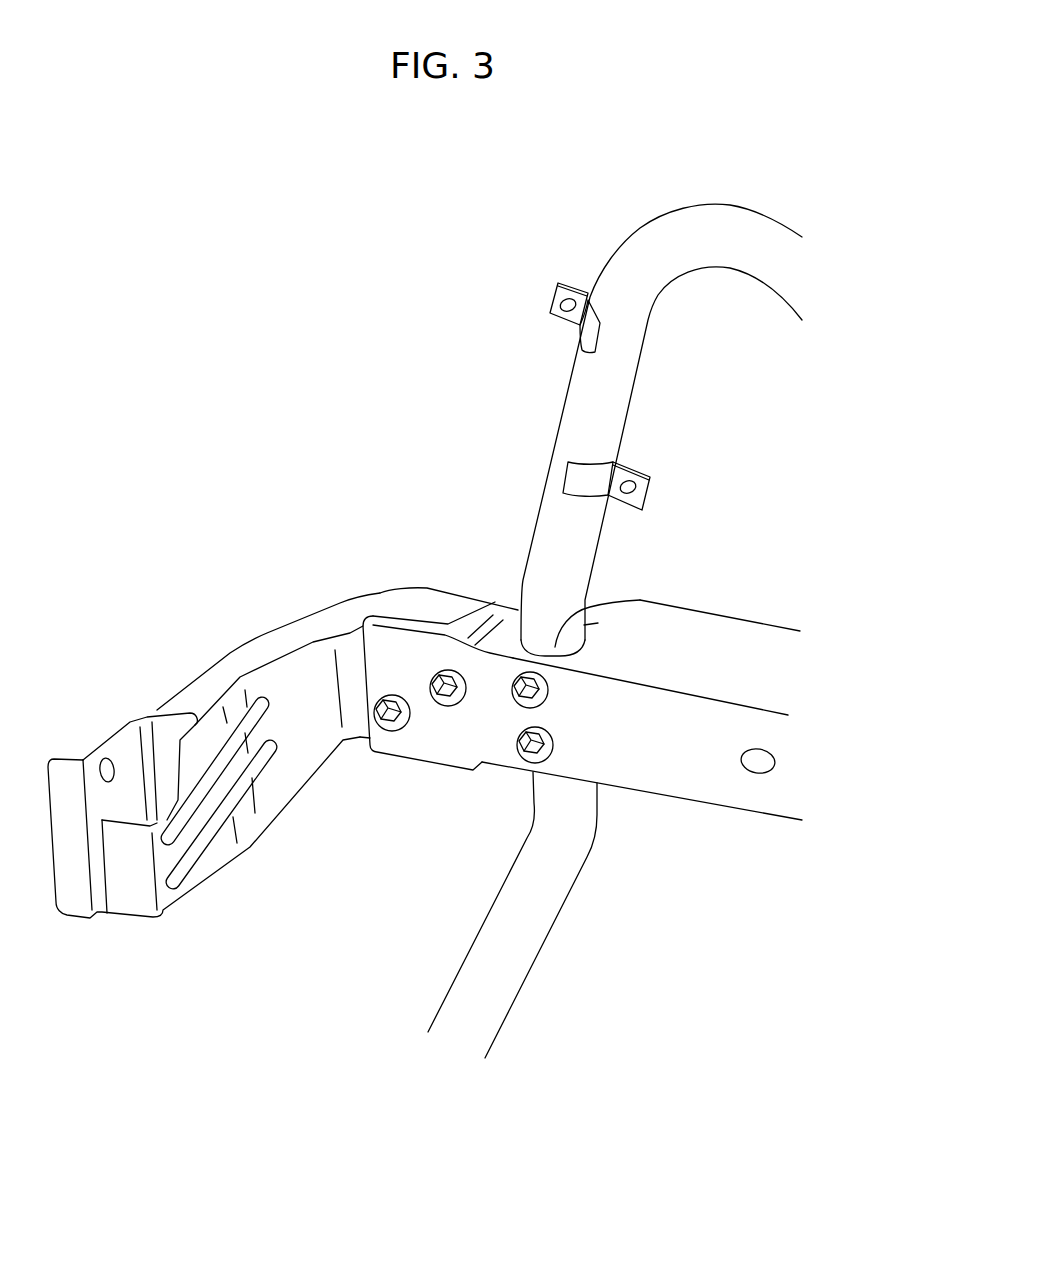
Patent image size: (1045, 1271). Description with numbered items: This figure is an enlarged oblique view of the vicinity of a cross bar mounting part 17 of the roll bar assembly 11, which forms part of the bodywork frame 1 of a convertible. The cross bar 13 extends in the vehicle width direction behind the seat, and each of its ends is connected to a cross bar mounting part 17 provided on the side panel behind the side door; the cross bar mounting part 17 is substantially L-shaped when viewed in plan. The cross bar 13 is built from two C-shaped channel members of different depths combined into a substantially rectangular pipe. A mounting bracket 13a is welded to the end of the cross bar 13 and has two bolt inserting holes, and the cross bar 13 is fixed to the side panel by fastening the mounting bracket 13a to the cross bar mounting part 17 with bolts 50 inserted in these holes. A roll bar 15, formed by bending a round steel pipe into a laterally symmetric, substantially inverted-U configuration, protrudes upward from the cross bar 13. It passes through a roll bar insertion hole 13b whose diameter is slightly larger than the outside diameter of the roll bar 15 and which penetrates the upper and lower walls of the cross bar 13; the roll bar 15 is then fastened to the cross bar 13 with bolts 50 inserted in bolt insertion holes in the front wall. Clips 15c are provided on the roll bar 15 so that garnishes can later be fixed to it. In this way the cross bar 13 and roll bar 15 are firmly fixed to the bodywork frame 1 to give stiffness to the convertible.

The bodywork frame 1 is at (566, 230).
The roll bar assembly 11 is at (672, 435).
The cross bar 13 is at (675, 630).
The mounting bracket 13a is at (383, 647).
The roll bar insertion hole 13b is at (590, 610).
The roll bar 15 is at (697, 222).
The clip 15c is at (552, 290).
The cross bar mounting part 17 is at (293, 677).
The bolt 50 is at (518, 675).